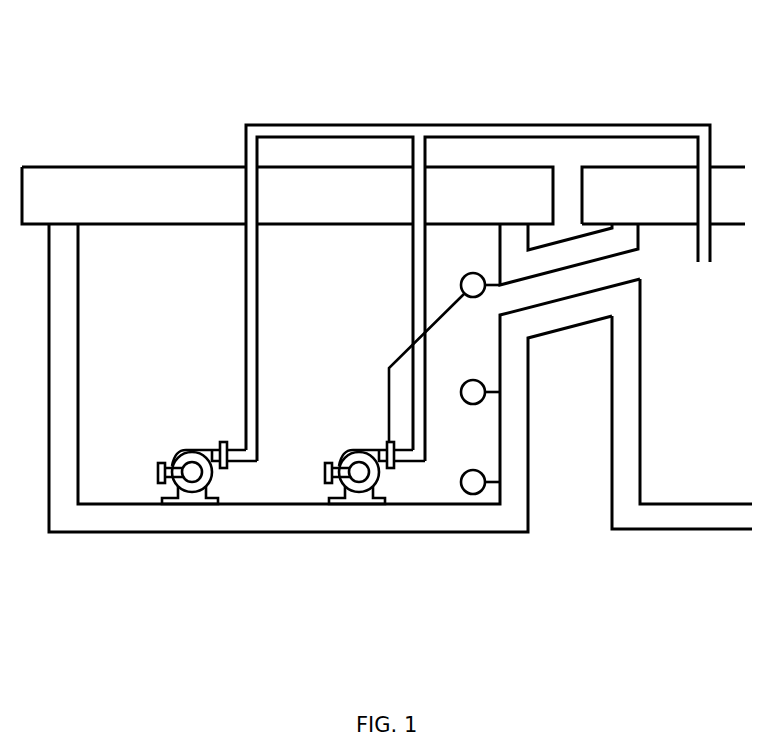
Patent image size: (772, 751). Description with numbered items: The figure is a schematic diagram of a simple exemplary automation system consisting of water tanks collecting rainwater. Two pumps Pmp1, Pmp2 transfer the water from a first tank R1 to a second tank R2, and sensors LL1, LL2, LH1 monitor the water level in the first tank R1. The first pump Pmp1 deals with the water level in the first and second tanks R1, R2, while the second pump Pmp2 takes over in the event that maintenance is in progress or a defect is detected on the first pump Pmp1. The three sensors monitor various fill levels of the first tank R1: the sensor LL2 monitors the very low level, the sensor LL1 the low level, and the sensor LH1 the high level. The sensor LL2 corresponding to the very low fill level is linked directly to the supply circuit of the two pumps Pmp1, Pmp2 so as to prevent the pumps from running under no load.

The first tank R1 is at (167, 258).
The second tank R2 is at (697, 473).
The high level sensor LH1 is at (473, 273).
The low level sensor LL1 is at (472, 405).
The very low level sensor LL2 is at (478, 495).
The first pump Pmp1 is at (190, 492).
The second pump Pmp2 is at (354, 492).